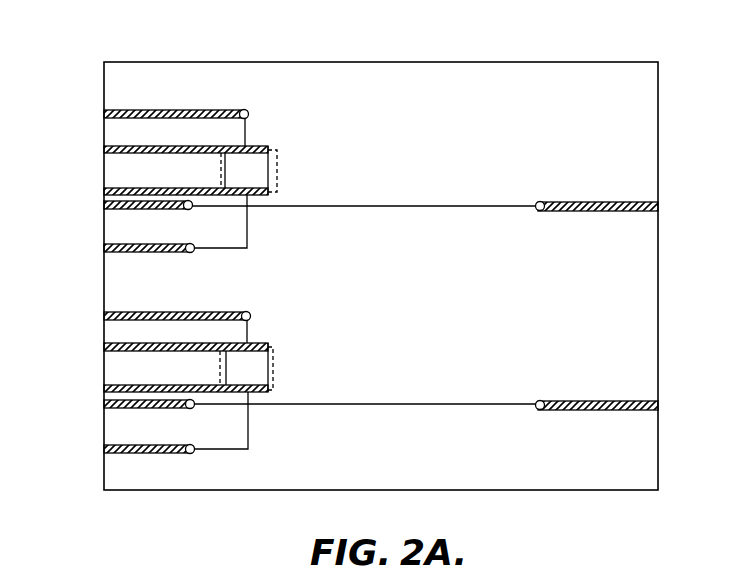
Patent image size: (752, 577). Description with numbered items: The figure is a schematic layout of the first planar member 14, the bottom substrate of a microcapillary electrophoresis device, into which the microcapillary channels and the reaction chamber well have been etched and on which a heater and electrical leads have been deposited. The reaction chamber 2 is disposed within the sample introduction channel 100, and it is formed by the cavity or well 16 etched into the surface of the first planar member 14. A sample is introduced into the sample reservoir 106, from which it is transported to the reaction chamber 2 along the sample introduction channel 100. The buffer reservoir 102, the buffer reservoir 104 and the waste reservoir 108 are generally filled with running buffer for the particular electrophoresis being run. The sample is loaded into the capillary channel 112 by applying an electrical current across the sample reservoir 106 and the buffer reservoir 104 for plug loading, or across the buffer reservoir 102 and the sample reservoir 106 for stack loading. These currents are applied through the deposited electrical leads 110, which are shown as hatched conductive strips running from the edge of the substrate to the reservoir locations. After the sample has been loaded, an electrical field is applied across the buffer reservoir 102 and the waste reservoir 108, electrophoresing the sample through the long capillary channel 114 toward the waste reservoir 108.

The first planar member 14 is at (92, 49).
The electrical leads 110 is at (120, 109).
The sample reservoir 106 is at (245, 113).
The sample introduction channel 100 is at (246, 128).
The reaction chamber 2 is at (266, 146).
The cavity or well 16 is at (278, 168).
The buffer reservoir 102 is at (178, 211).
The buffer reservoir 104 is at (183, 254).
The capillary channel 112 is at (248, 238).
The capillary channel 114 is at (437, 206).
The waste reservoir 108 is at (540, 213).